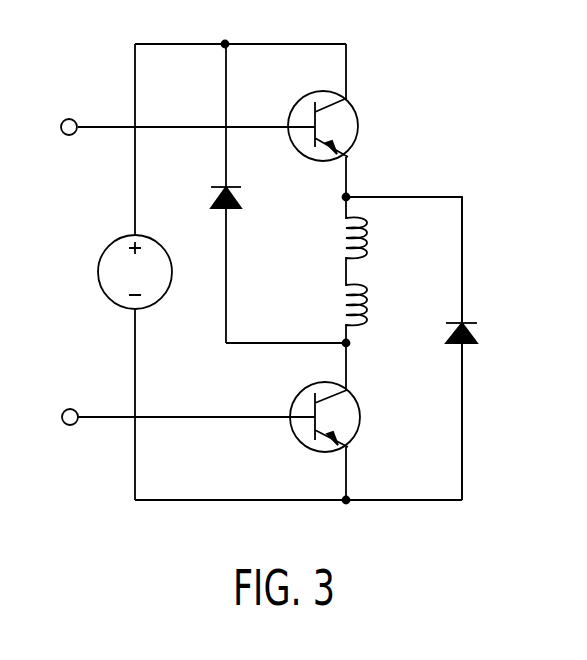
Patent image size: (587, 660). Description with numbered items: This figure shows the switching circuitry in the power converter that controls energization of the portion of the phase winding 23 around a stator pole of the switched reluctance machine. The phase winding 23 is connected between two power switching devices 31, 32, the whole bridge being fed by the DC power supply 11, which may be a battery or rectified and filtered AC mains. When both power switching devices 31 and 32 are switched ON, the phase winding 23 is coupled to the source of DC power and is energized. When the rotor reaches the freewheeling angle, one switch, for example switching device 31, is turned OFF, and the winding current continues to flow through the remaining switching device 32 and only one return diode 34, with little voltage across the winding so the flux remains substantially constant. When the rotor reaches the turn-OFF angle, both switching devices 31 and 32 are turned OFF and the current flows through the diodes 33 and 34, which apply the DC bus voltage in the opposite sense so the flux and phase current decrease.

The input DC power supply 11 is at (110, 282).
The phase winding 23 is at (370, 298).
The power switching device 31 is at (305, 93).
The power switching device 32 is at (306, 388).
The return diode 33 is at (224, 186).
The return diode 34 is at (475, 333).